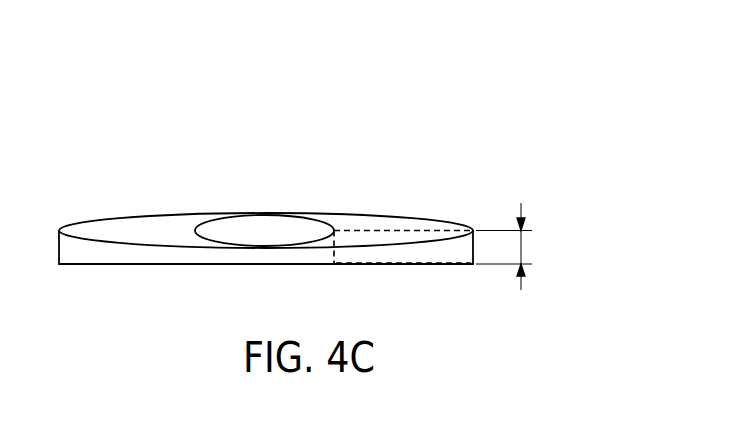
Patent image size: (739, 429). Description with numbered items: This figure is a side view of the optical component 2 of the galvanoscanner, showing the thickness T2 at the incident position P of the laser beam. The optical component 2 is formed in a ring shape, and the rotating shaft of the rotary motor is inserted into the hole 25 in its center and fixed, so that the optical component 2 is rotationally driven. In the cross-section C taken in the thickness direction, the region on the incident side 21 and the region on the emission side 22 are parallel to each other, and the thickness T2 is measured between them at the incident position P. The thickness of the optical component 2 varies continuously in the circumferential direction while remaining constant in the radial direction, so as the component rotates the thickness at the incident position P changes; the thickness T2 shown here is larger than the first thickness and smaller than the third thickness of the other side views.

The optical component 2 is at (187, 222).
The hole 25 is at (280, 222).
The incident side 21 is at (398, 222).
The emission side 22 is at (395, 265).
The cross-section C is at (357, 222).
The incident position P is at (404, 191).
The thickness T2 is at (521, 248).